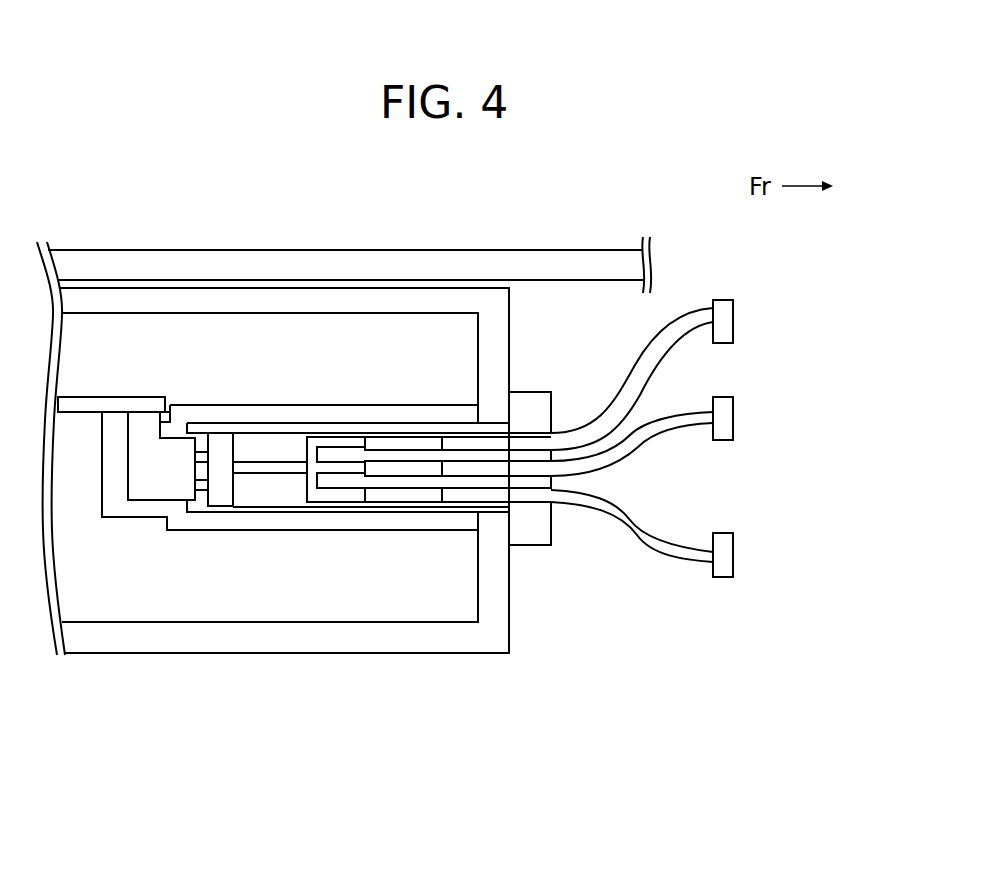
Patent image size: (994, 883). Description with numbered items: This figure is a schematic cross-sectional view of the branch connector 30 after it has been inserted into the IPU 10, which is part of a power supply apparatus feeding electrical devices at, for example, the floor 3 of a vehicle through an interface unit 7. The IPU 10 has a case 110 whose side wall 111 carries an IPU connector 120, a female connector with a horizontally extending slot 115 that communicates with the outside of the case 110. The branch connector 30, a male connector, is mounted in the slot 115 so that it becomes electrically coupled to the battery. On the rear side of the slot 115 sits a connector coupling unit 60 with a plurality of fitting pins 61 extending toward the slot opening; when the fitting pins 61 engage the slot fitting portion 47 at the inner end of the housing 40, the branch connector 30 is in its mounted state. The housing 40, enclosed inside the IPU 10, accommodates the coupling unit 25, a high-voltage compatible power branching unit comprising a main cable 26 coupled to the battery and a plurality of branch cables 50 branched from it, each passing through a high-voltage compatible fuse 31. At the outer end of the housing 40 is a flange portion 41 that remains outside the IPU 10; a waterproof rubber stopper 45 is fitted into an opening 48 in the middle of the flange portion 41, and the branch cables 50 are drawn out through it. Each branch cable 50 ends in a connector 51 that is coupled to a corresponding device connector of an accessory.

The floor 3 is at (597, 282).
The interface unit 7 is at (675, 507).
The IPU 10 is at (352, 525).
The coupling unit 25 is at (349, 517).
The main cable 26 is at (254, 474).
The branch connector 30 is at (530, 440).
The fuse 31 is at (418, 495).
The housing 40 is at (281, 512).
The flange portion 41 is at (553, 412).
The waterproof rubber stopper 45 is at (633, 436).
The slot fitting portion 47 is at (232, 432).
The opening 48 is at (557, 504).
The branch cable 50 is at (652, 357).
The connector 51 is at (733, 316).
The connector coupling unit 60 is at (157, 482).
The fitting pin 61 is at (195, 483).
The case 110 is at (382, 640).
The side wall 111 is at (510, 600).
The slot 115 is at (204, 430).
The IPU connector 120 is at (318, 410).